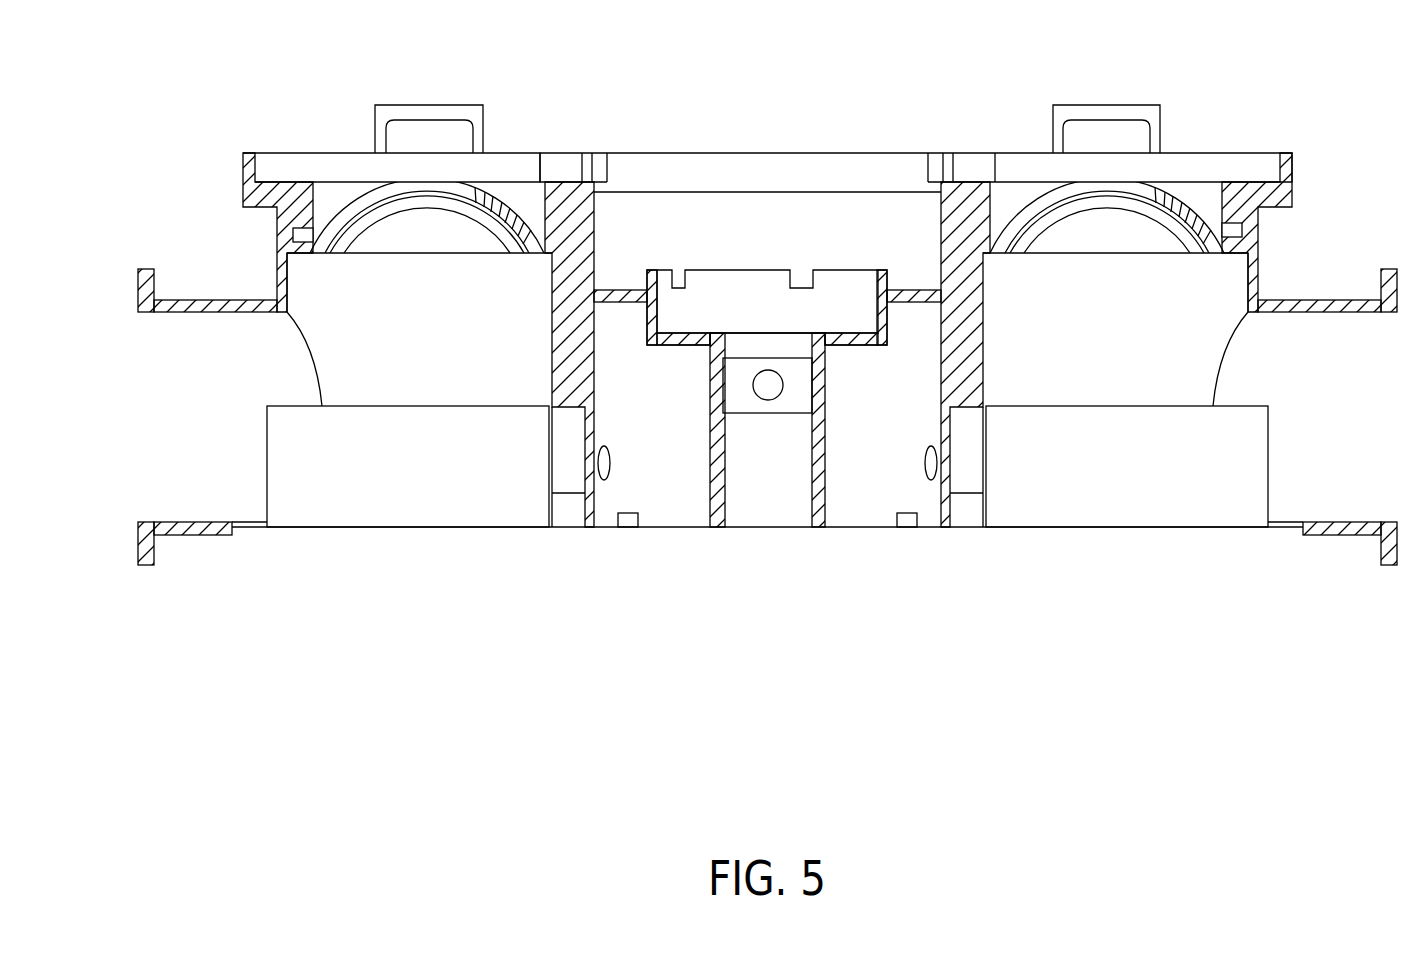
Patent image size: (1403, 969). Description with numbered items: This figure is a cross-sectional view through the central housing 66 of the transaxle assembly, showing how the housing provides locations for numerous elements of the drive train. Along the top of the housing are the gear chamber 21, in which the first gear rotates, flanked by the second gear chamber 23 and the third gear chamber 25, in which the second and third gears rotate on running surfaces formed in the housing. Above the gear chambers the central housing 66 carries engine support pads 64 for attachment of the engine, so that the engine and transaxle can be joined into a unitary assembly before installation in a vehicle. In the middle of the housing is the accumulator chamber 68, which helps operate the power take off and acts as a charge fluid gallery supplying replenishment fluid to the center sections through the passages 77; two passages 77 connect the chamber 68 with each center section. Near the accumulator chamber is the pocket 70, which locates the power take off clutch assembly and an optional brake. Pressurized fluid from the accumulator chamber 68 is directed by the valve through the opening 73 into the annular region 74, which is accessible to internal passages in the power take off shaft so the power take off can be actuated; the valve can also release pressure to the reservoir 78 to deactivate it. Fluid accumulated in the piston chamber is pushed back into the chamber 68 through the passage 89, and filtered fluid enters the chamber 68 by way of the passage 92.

The gear chamber 21 is at (752, 180).
The second gear chamber 23 is at (413, 178).
The third gear chamber 25 is at (1092, 178).
The engine support pads 64 is at (428, 105).
The central housing 66 is at (1044, 528).
The accumulator chamber 68 is at (842, 418).
The pocket 70 is at (730, 310).
The opening 73 is at (768, 386).
The annular region 74 is at (795, 400).
The passages 77 is at (611, 463).
The reservoir 78 is at (413, 335).
The passage 89 is at (628, 529).
The passage 92 is at (905, 529).